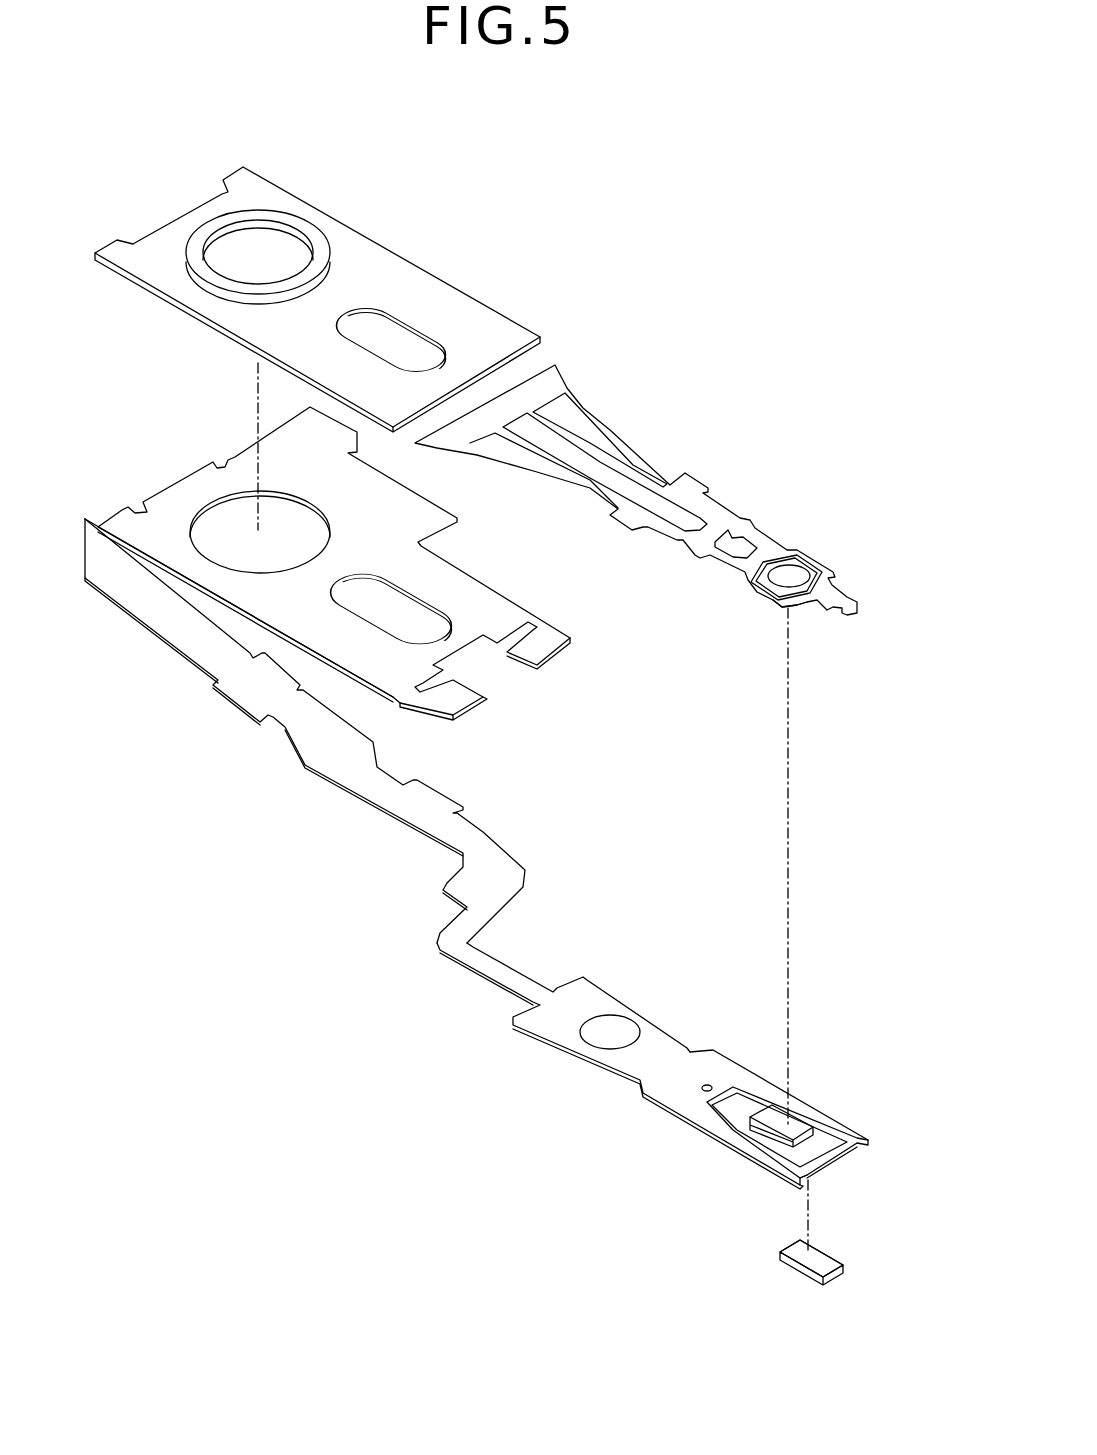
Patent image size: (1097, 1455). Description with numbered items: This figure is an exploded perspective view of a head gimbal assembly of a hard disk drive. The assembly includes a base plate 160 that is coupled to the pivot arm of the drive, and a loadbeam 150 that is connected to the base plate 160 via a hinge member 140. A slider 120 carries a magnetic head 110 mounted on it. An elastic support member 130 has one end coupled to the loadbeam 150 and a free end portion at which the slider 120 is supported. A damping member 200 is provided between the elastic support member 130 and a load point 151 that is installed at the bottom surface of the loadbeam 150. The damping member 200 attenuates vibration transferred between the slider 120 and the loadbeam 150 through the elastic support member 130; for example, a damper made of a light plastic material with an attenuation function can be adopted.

The magnetic head 110 is at (832, 1277).
The slider 120 is at (795, 1263).
The elastic support member 130 is at (597, 998).
The hinge member 140 is at (187, 487).
The loadbeam 150 is at (607, 437).
The load point 151 is at (796, 610).
The base plate 160 is at (390, 265).
The damping member 200 is at (800, 1123).